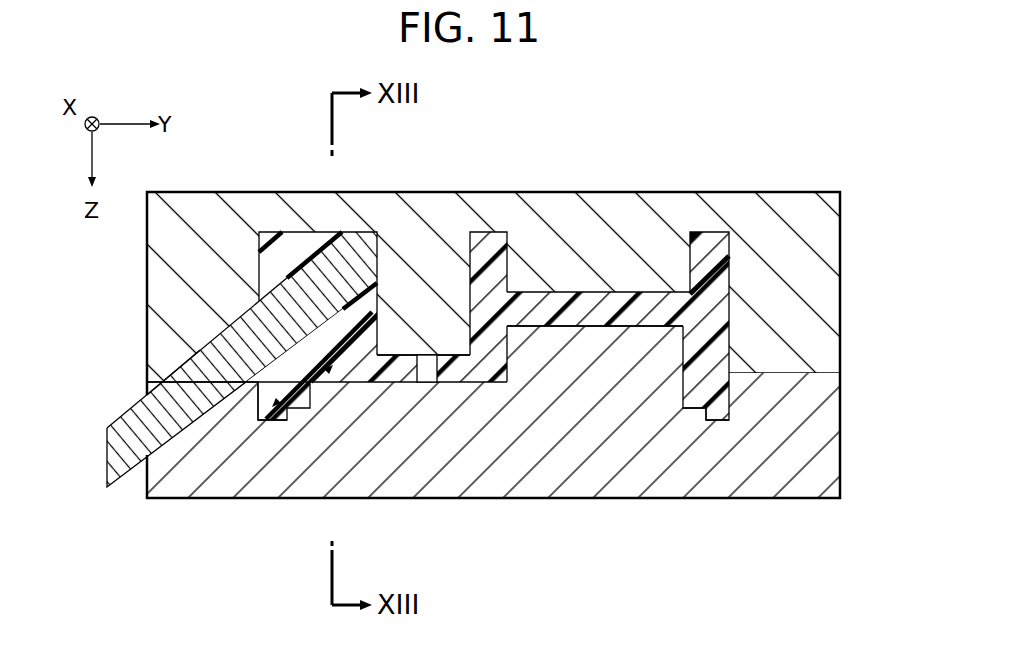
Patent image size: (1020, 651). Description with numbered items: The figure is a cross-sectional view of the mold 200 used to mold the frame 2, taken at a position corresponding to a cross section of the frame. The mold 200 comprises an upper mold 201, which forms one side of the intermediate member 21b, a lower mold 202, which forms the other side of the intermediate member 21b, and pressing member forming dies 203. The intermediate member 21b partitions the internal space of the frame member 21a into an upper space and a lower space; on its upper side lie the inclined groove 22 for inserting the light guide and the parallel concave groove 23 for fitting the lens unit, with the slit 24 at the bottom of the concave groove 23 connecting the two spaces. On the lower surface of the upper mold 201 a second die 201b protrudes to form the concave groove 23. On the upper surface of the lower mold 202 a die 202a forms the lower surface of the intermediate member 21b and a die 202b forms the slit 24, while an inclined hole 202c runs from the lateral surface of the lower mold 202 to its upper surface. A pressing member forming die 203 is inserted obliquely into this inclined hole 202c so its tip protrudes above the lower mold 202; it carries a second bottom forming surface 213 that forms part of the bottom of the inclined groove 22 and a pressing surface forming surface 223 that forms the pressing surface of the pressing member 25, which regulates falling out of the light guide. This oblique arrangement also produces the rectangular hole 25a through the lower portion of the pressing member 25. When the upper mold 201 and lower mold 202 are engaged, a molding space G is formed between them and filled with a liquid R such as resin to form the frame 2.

The mold 200 is at (766, 128).
The upper mold 201 is at (828, 307).
The lower mold 202 is at (828, 457).
The pressing member forming die 203 is at (113, 459).
The frame 2 is at (322, 382).
The inclined groove 22 is at (340, 300).
The concave groove 23 is at (380, 300).
The slit 24 is at (430, 360).
The pressing member 25 is at (285, 248).
The hole 25a is at (300, 332).
The frame member 21a is at (705, 247).
The intermediate member 21b is at (545, 300).
The second die 201b is at (430, 345).
The die 202a is at (595, 330).
The die 202b is at (421, 385).
The inclined hole 202c is at (195, 423).
The second bottom forming surface 213 is at (168, 373).
The pressing surface forming surface 223 is at (262, 256).
The liquid R is at (662, 300).
The molding space G is at (713, 397).